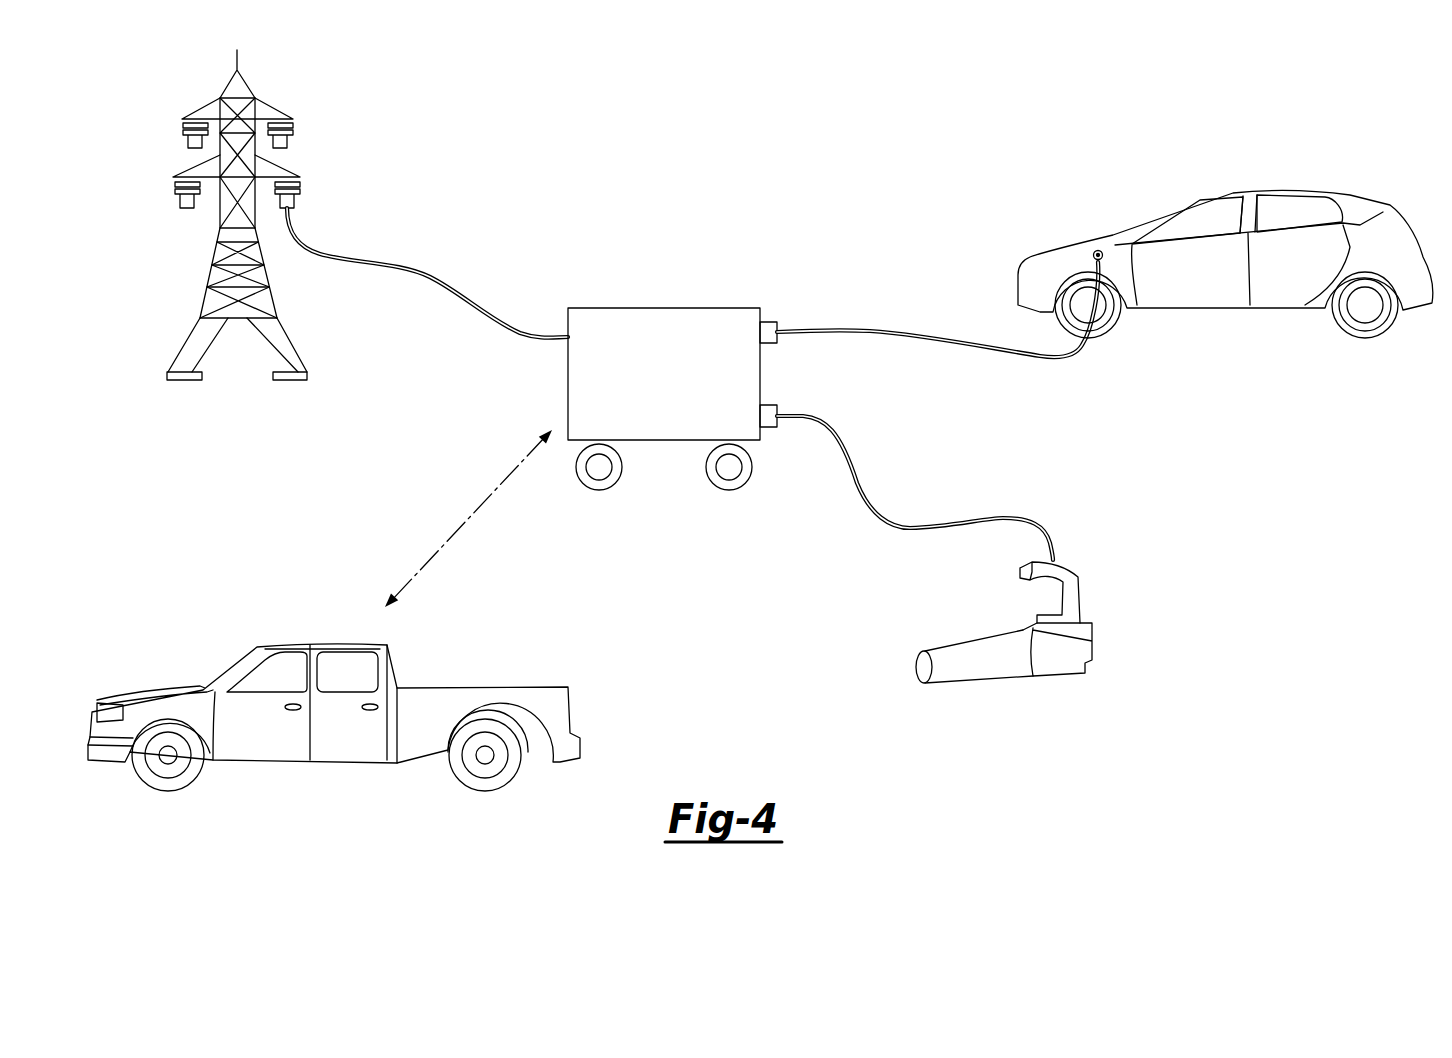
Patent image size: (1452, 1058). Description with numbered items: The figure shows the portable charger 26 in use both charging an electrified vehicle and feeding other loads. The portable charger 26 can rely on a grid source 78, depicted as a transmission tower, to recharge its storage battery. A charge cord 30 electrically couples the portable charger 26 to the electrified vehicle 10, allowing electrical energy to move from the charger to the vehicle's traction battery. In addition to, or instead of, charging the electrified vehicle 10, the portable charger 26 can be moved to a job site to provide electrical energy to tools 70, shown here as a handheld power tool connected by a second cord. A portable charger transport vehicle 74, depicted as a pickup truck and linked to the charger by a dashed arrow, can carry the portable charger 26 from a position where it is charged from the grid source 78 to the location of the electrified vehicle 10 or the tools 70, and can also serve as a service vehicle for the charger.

The grid source 78 is at (274, 64).
The portable charger 26 is at (662, 308).
The charge cord 30 is at (865, 332).
The electrified vehicle 10 is at (1257, 192).
The portable charger transport vehicle 74 is at (156, 664).
The tools 70 is at (1103, 537).